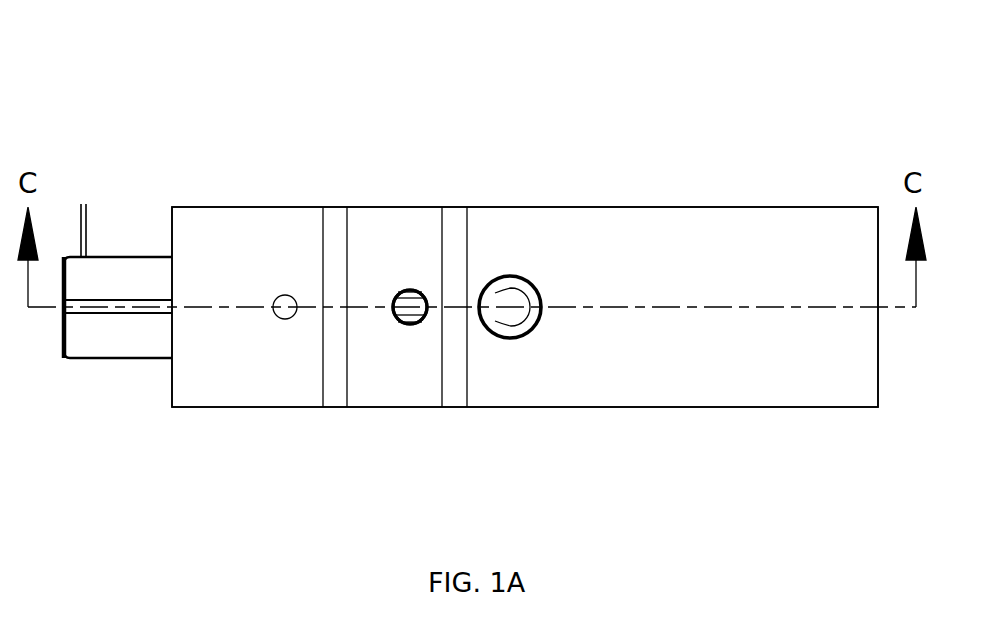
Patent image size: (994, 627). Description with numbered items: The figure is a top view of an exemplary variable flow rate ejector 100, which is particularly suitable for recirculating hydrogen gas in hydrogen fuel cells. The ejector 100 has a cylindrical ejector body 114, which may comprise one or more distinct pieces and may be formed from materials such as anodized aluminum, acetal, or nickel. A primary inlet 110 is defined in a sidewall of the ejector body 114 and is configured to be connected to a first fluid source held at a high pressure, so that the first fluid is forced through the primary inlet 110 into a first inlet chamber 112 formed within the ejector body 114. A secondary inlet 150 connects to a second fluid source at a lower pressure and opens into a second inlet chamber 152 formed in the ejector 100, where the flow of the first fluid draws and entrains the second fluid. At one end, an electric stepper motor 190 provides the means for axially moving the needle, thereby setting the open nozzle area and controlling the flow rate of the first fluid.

The variable flow rate ejector 100 is at (166, 33).
The primary inlet 110 is at (410, 290).
The first inlet chamber 112 is at (400, 292).
The ejector body 114 is at (660, 233).
The secondary inlet 150 is at (510, 276).
The second inlet chamber 152 is at (515, 307).
The electric stepper motor 190 is at (135, 335).